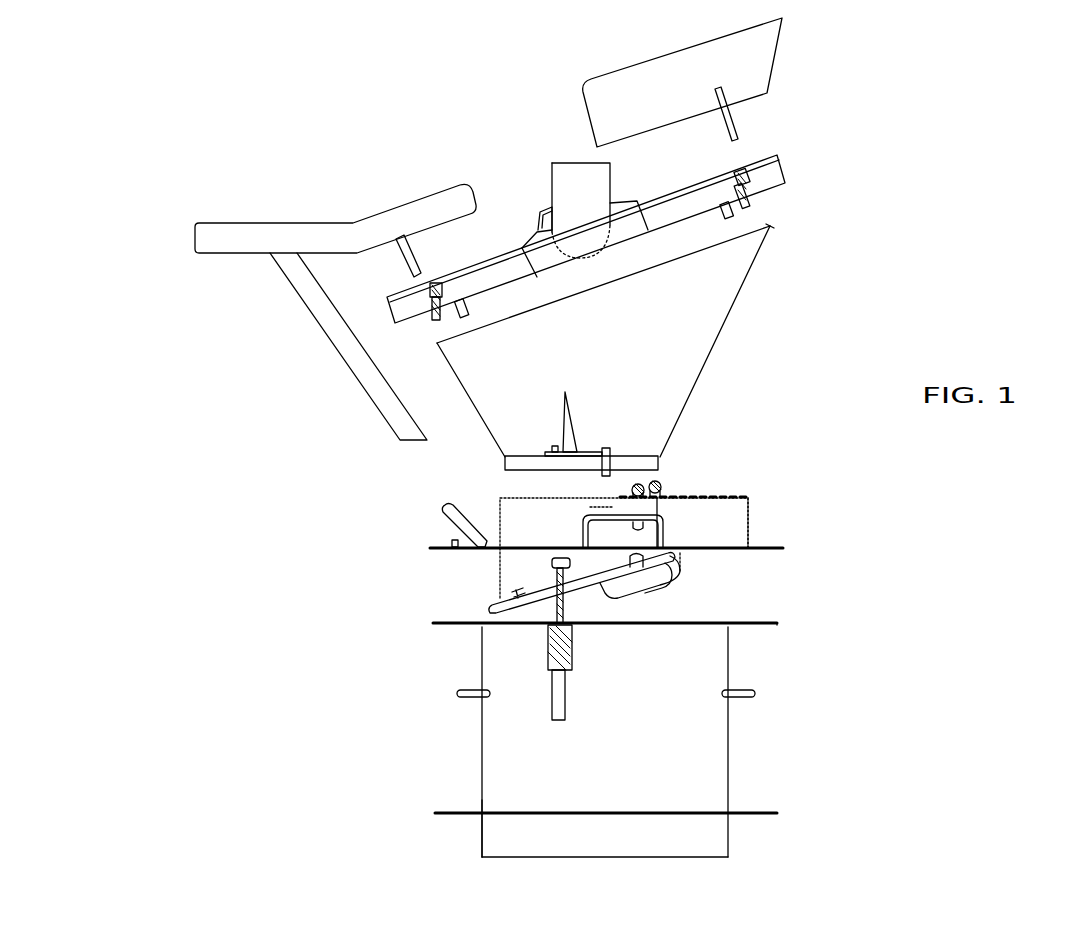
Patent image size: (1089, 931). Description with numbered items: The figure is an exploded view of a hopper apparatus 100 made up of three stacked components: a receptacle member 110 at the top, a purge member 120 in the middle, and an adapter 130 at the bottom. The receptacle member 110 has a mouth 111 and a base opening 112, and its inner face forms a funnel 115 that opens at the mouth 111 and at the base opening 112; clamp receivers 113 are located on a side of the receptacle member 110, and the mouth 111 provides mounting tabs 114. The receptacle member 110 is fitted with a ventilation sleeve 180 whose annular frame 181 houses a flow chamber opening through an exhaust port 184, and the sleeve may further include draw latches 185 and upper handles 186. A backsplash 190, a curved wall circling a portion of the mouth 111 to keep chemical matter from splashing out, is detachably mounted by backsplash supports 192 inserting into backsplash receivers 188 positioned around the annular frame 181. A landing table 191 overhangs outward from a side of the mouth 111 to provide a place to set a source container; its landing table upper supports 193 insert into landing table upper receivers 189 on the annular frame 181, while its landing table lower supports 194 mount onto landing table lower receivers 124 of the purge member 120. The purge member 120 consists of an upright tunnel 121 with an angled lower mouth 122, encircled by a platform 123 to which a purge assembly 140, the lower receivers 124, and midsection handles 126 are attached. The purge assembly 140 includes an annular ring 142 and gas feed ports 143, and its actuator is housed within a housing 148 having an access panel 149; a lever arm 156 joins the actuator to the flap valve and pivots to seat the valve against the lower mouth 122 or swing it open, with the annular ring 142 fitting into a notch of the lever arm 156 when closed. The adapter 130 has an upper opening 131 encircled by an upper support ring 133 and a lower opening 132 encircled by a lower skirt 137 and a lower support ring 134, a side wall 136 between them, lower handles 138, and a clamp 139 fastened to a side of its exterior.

The hopper apparatus 100 is at (950, 197).
The receptacle member 110 is at (620, 318).
The mouth 111 is at (771, 226).
The base opening 112 is at (505, 462).
The clamp receivers 113 is at (570, 450).
The mounting tabs 114 is at (740, 232).
The funnel 115 is at (477, 378).
The purge member 120 is at (598, 587).
The tunnel 121 is at (507, 577).
The lower mouth 122 is at (597, 583).
The platform 123 is at (763, 547).
The landing table lower receivers 124 is at (443, 518).
The midsection handles 126 is at (582, 527).
The adapter 130 is at (623, 736).
The upper opening 131 is at (707, 622).
The lower opening 132 is at (717, 855).
The upper support ring 133 is at (773, 622).
The lower support ring 134 is at (765, 817).
The container side wall 136 is at (498, 745).
The lower skirt 137 is at (482, 842).
The lower handles 138 is at (455, 695).
The clamp 139 is at (565, 697).
The purge assembly 140 is at (655, 494).
The annular ring 142 is at (662, 568).
The gas feed ports 143 is at (660, 483).
The housing 148 is at (748, 502).
The access panel 149 is at (718, 493).
The lever arm 156 is at (680, 568).
The ventilation sleeve 180 is at (635, 210).
The annular frame 181 is at (505, 250).
The exhaust port 184 is at (562, 163).
The draw latches 185 is at (432, 327).
The upper handles 186 is at (542, 207).
The backsplash receivers 188 is at (725, 222).
The landing table upper receivers 189 is at (468, 305).
The backsplash 190 is at (780, 43).
The landing table 191 is at (243, 220).
The backsplash supports 192 is at (737, 113).
The landing table upper supports 193 is at (398, 253).
The landing table lower supports 194 is at (353, 375).